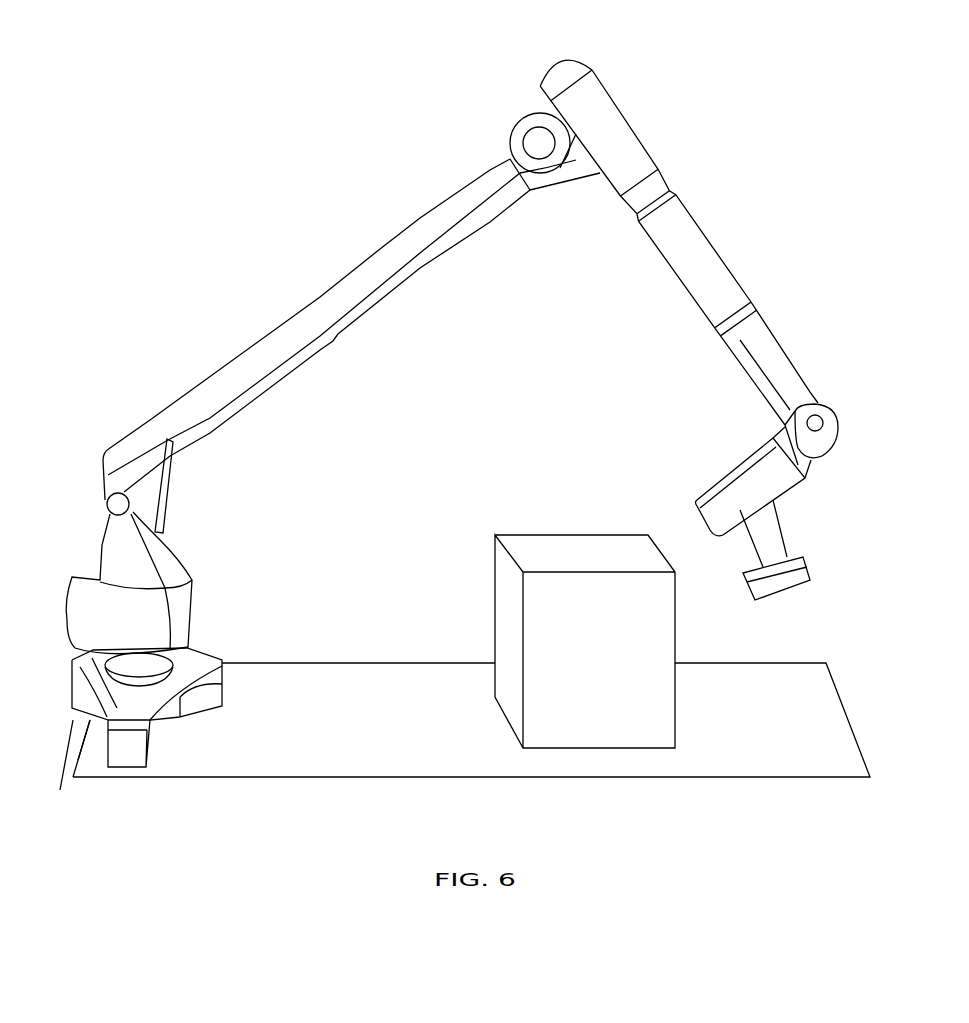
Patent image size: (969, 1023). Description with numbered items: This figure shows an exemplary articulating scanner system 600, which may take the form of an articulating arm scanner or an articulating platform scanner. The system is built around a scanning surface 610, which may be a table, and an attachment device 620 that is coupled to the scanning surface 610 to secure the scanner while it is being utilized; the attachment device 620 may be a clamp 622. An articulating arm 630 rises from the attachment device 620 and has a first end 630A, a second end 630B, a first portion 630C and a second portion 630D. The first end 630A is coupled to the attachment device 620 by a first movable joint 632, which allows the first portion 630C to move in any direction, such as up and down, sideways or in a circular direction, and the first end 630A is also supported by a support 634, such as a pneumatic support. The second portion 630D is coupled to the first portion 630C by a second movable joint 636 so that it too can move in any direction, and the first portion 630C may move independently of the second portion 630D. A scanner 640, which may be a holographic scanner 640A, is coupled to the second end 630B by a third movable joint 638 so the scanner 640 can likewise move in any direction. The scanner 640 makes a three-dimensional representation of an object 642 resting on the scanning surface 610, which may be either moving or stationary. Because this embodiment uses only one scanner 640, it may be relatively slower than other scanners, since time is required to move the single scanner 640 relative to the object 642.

The articulating scanner system 600 is at (174, 176).
The scanning surface 610 is at (295, 804).
The attachment device 620 is at (235, 633).
The clamp 622 is at (67, 767).
The articulating arm 630 is at (453, 297).
The first end 630A is at (115, 463).
The second end 630B is at (808, 397).
The first portion 630C is at (318, 318).
The second portion 630D is at (713, 258).
The first movable joint 632 is at (117, 505).
The support 634 is at (172, 473).
The second movable joint 636 is at (541, 141).
The third movable joint 638 is at (822, 427).
The scanner 640 is at (703, 447).
The holographic scanner 640A is at (695, 505).
The object 642 is at (512, 518).